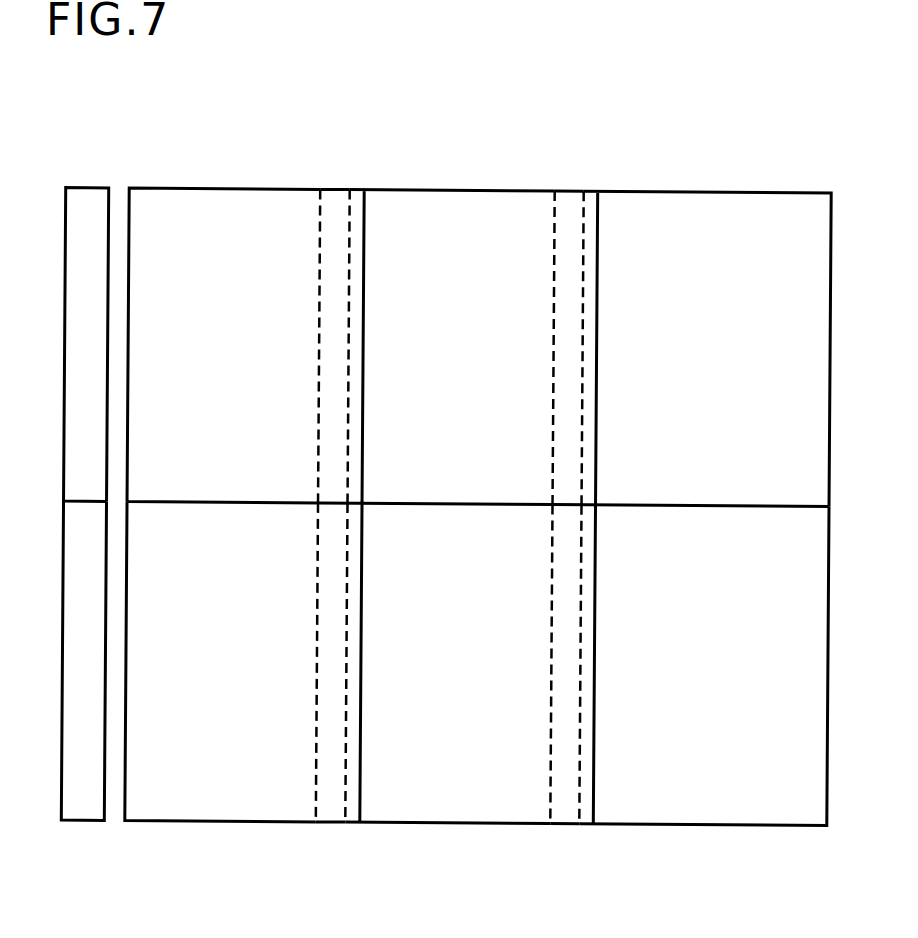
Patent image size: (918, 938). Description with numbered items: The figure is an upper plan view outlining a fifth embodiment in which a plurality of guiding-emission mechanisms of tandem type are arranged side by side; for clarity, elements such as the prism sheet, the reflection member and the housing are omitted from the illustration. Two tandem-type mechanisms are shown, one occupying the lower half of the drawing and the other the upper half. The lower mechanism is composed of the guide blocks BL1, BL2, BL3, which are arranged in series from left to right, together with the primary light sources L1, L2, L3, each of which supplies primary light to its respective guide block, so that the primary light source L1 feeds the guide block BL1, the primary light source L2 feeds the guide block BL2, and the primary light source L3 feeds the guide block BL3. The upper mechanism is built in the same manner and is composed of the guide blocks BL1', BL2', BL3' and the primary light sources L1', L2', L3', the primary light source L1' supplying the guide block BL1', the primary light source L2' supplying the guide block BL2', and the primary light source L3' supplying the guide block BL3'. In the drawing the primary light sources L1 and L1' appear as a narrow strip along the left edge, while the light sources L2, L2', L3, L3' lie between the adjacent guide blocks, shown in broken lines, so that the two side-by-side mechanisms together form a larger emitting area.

The primary light source L1' is at (94, 295).
The guide block BL1' is at (223, 296).
The primary light source L2' is at (343, 296).
The guide block BL2' is at (436, 297).
The primary light source L3' is at (581, 297).
The guide block BL3' is at (692, 297).
The primary light source L1 is at (84, 704).
The guide block BL1 is at (221, 705).
The primary light source L2 is at (338, 705).
The guide block BL2 is at (448, 705).
The primary light source L3 is at (572, 706).
The guide block BL3 is at (704, 706).